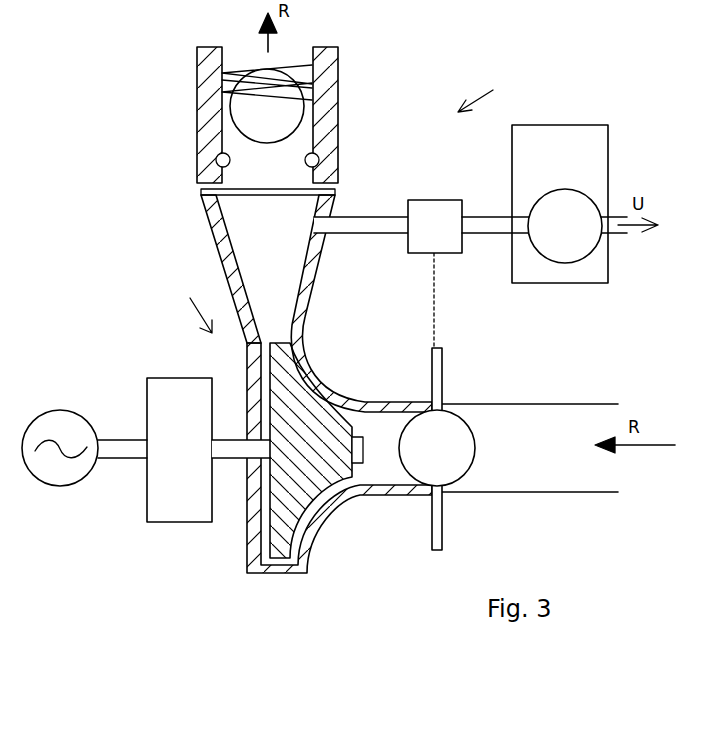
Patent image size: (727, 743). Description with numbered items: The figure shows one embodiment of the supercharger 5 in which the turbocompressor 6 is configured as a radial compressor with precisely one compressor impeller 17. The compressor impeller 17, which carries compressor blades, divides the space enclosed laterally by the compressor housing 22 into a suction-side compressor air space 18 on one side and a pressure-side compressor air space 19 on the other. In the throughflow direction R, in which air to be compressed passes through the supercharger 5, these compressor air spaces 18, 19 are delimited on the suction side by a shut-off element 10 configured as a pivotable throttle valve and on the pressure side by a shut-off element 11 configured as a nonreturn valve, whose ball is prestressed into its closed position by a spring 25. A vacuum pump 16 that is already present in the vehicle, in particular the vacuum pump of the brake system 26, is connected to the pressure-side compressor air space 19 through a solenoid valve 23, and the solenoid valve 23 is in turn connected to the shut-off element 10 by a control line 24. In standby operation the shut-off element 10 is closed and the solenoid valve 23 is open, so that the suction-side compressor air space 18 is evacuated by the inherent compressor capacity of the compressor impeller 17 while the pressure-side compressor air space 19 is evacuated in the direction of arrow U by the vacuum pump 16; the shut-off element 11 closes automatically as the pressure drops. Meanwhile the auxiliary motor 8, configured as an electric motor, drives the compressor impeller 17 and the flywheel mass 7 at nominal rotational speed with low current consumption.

The supercharger 5 is at (482, 92).
The turbocompressor 6 is at (192, 304).
The flywheel mass 7 is at (171, 378).
The auxiliary motor 8 is at (56, 412).
The shut-off element 10 is at (436, 448).
The shut-off element 11 is at (252, 108).
The vacuum pump 16 is at (565, 189).
The compressor impeller 17 is at (280, 506).
The suction-side compressor air space 18 is at (382, 463).
The pressure-side compressor air space 19 is at (259, 264).
The compressor housing 22 is at (288, 570).
The solenoid valve 23 is at (440, 198).
The control line 24 is at (435, 293).
The spring 25 is at (283, 67).
The brake system 26 is at (578, 125).